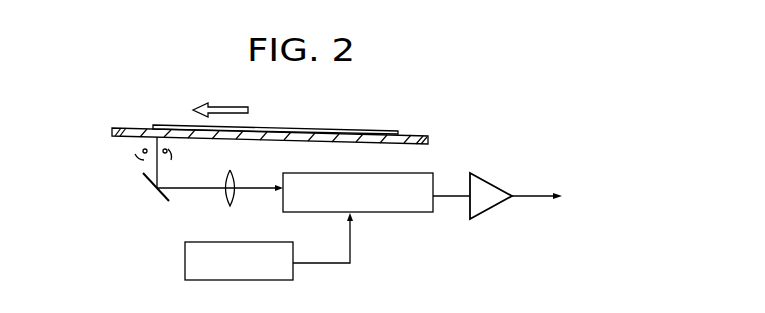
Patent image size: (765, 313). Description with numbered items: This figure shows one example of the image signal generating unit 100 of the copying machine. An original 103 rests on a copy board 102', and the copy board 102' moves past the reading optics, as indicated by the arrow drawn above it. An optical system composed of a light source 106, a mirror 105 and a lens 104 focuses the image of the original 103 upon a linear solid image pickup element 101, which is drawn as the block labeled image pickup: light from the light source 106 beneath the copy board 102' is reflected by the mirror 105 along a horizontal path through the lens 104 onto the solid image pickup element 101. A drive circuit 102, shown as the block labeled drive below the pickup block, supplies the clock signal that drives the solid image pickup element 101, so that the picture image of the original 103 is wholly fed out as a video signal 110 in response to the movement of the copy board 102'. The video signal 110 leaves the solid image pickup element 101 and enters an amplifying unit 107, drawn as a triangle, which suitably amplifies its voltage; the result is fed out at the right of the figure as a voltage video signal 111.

The image signal generating unit 100 is at (432, 112).
The linear solid image pickup element 101 is at (387, 212).
The drive circuit 102 is at (237, 246).
The copy board 102' is at (261, 114).
The original 103 is at (168, 124).
The lens 104 is at (227, 186).
The mirror 105 is at (158, 196).
The light source 106 is at (135, 154).
The amplifying unit 107 is at (497, 179).
The video signal 110 is at (452, 197).
The voltage video signal 111 is at (528, 197).